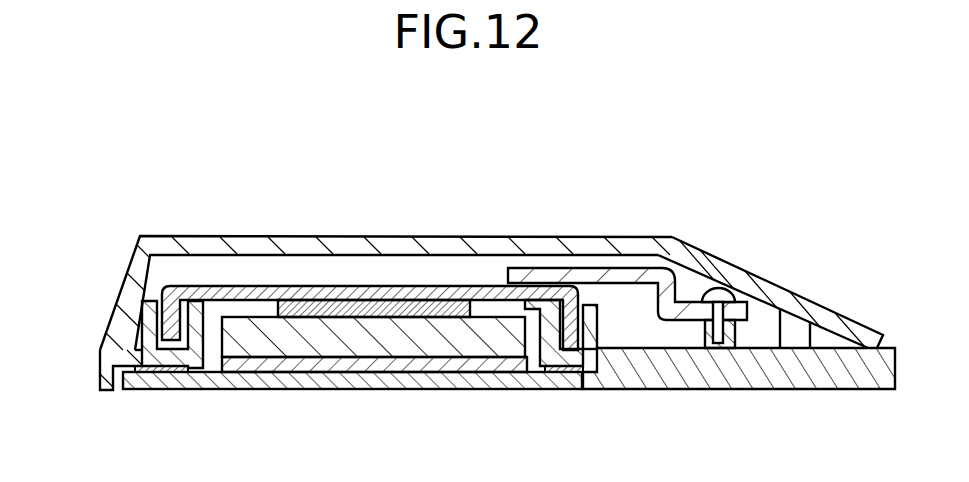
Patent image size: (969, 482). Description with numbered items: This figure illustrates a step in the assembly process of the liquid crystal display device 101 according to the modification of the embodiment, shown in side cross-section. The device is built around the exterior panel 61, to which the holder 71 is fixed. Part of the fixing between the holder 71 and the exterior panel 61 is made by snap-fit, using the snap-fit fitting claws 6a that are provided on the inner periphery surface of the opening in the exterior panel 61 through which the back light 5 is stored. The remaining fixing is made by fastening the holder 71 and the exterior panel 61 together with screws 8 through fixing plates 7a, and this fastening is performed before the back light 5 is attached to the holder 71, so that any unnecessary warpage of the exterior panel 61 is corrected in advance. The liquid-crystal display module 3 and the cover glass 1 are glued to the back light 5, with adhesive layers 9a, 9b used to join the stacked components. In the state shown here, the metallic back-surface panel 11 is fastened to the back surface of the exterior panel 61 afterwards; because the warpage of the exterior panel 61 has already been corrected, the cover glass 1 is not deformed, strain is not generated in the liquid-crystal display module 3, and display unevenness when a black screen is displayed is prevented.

The liquid crystal display device 101 is at (470, 147).
The exterior panel 61 is at (100, 367).
The snap-fit fitting claws 6a is at (173, 285).
The holder 71 is at (292, 286).
The adhesive layer 9a is at (377, 300).
The back light 5 is at (462, 345).
The liquid-crystal display module 3 is at (363, 372).
The cover glass 1 is at (290, 389).
The adhesive layer 9b is at (162, 372).
The back-surface panel 11 is at (798, 296).
The fixing plate 7a is at (655, 268).
The screw 8 is at (720, 288).